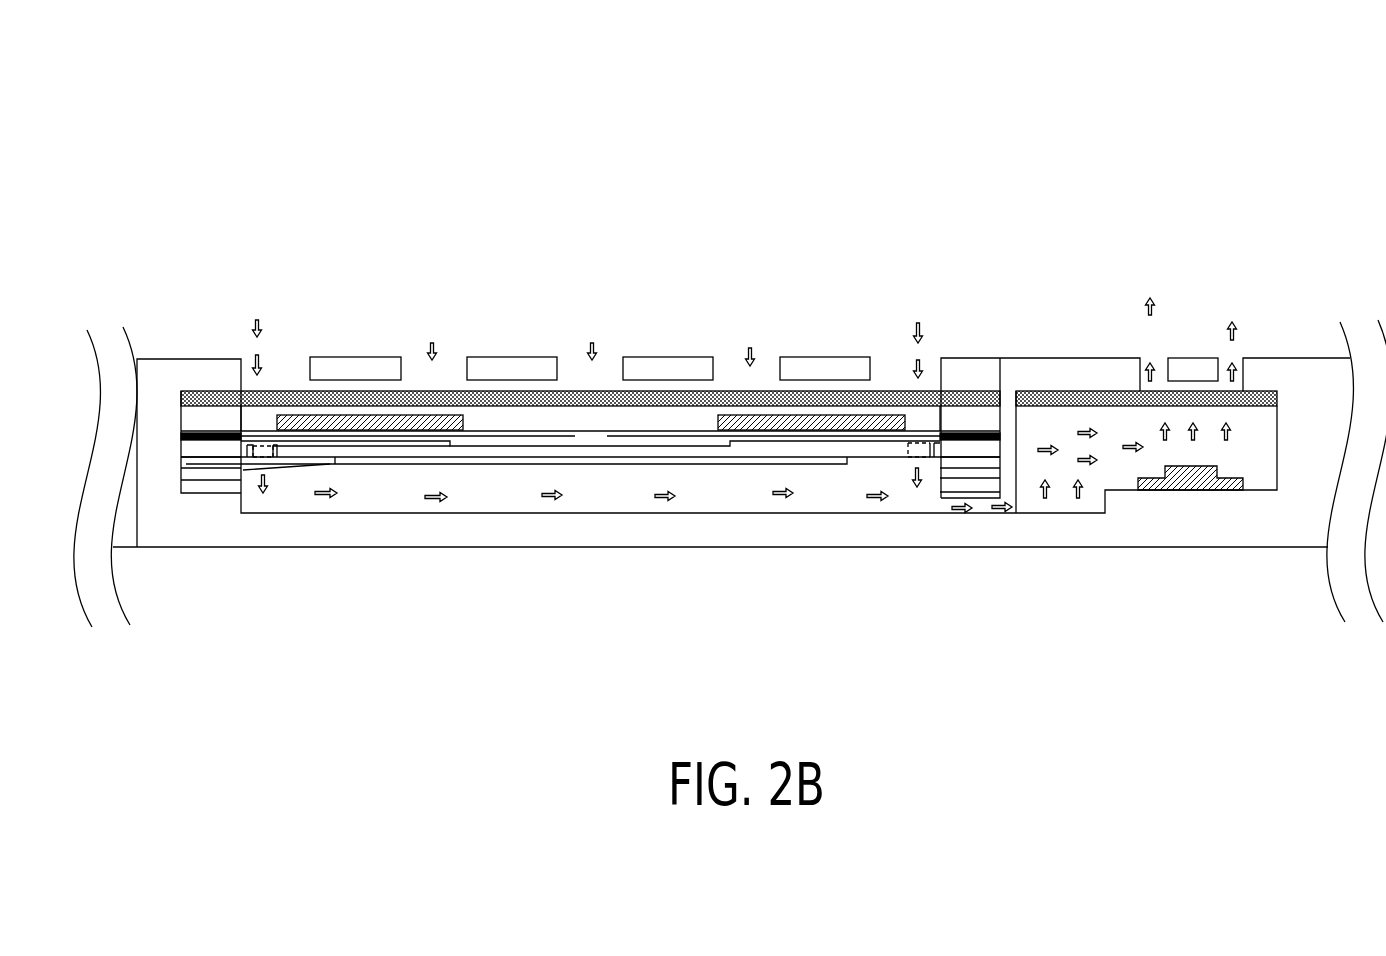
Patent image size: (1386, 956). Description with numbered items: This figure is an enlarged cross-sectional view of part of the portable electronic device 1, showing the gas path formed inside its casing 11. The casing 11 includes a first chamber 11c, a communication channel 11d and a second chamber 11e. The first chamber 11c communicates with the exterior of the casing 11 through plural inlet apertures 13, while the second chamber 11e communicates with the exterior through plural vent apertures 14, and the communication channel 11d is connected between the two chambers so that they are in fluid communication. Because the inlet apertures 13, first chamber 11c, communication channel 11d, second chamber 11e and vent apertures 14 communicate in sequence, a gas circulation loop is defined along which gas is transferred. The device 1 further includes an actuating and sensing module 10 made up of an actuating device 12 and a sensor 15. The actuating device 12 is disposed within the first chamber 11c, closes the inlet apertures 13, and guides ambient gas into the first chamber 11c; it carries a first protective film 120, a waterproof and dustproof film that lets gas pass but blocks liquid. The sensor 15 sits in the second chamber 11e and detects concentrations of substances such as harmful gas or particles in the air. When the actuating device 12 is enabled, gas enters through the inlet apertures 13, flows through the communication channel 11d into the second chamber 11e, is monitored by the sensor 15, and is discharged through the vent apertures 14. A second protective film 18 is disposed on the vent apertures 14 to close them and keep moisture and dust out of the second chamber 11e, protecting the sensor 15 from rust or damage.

The portable electronic device 1 is at (1315, 105).
The actuating and sensing module 10 is at (1018, 203).
The casing 11 is at (185, 530).
The first chamber 11c is at (405, 494).
The communication channel 11d is at (980, 508).
The second chamber 11e is at (1067, 478).
The actuating device 12 is at (865, 414).
The first protective film 120 is at (453, 391).
The inlet apertures 13 is at (607, 348).
The vent apertures 14 is at (1180, 330).
The sensor 15 is at (1177, 465).
The second protective film 18 is at (1243, 390).